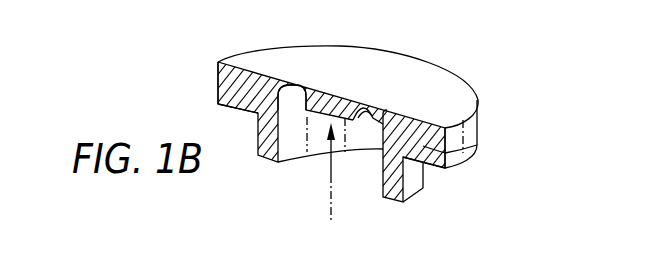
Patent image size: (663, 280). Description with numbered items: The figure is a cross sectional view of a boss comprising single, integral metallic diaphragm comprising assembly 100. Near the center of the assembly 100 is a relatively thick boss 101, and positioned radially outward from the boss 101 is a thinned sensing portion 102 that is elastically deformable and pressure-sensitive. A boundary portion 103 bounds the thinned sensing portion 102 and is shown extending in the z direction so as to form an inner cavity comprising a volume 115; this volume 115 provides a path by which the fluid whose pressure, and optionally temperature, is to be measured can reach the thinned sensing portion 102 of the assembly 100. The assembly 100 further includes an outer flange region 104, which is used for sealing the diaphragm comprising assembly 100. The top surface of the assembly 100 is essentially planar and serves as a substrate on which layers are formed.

The boss comprising single metallic diaphragm comprising assembly 100 is at (190, 62).
The boss 101 is at (332, 98).
The thinned sensing portion 102 is at (383, 110).
The boundary portion 103 is at (477, 141).
The outer flange region 104 is at (218, 87).
The volume 115 is at (369, 200).